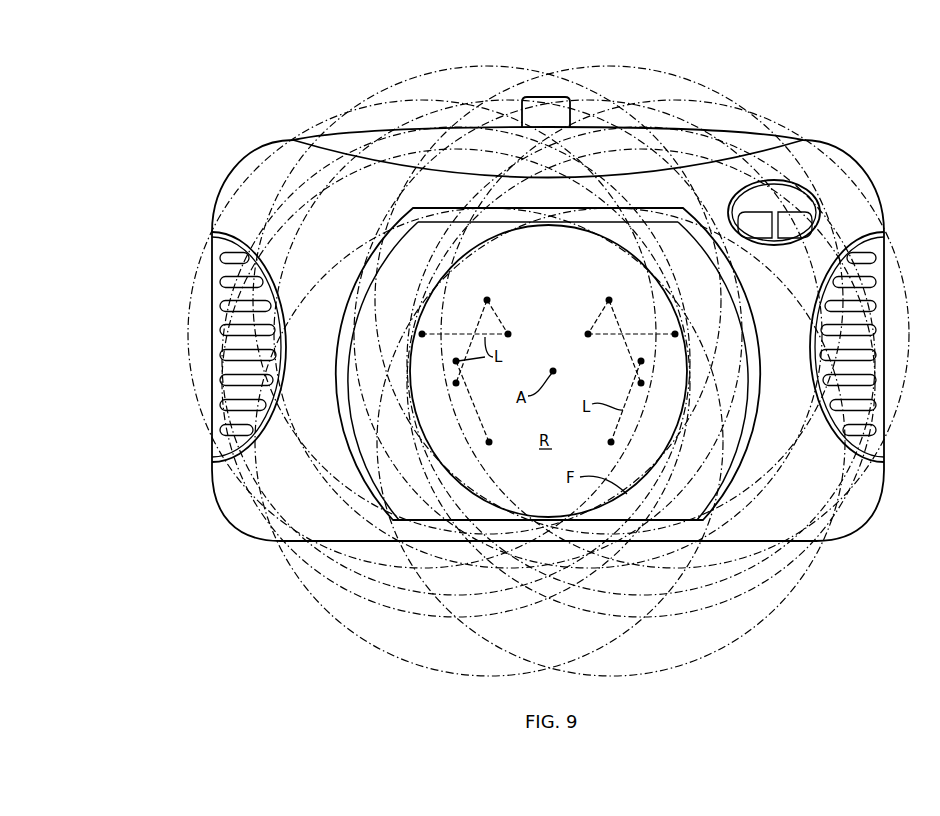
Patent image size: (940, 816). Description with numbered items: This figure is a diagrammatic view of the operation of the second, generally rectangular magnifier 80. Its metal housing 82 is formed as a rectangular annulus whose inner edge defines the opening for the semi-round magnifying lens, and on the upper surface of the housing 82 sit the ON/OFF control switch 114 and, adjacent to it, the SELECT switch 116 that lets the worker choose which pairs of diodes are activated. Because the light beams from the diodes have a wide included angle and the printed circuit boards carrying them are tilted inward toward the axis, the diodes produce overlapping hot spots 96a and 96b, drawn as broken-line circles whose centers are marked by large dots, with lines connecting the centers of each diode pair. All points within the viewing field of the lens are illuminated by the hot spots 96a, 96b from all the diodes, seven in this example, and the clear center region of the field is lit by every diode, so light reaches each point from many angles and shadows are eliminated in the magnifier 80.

The second magnifier embodiment 80 is at (216, 136).
The metal housing 82 is at (237, 509).
The hot spots 96a is at (487, 300).
The hot spots 96b is at (609, 300).
The ON/OFF control switch 114 is at (820, 217).
The SELECT switch 116 is at (775, 213).